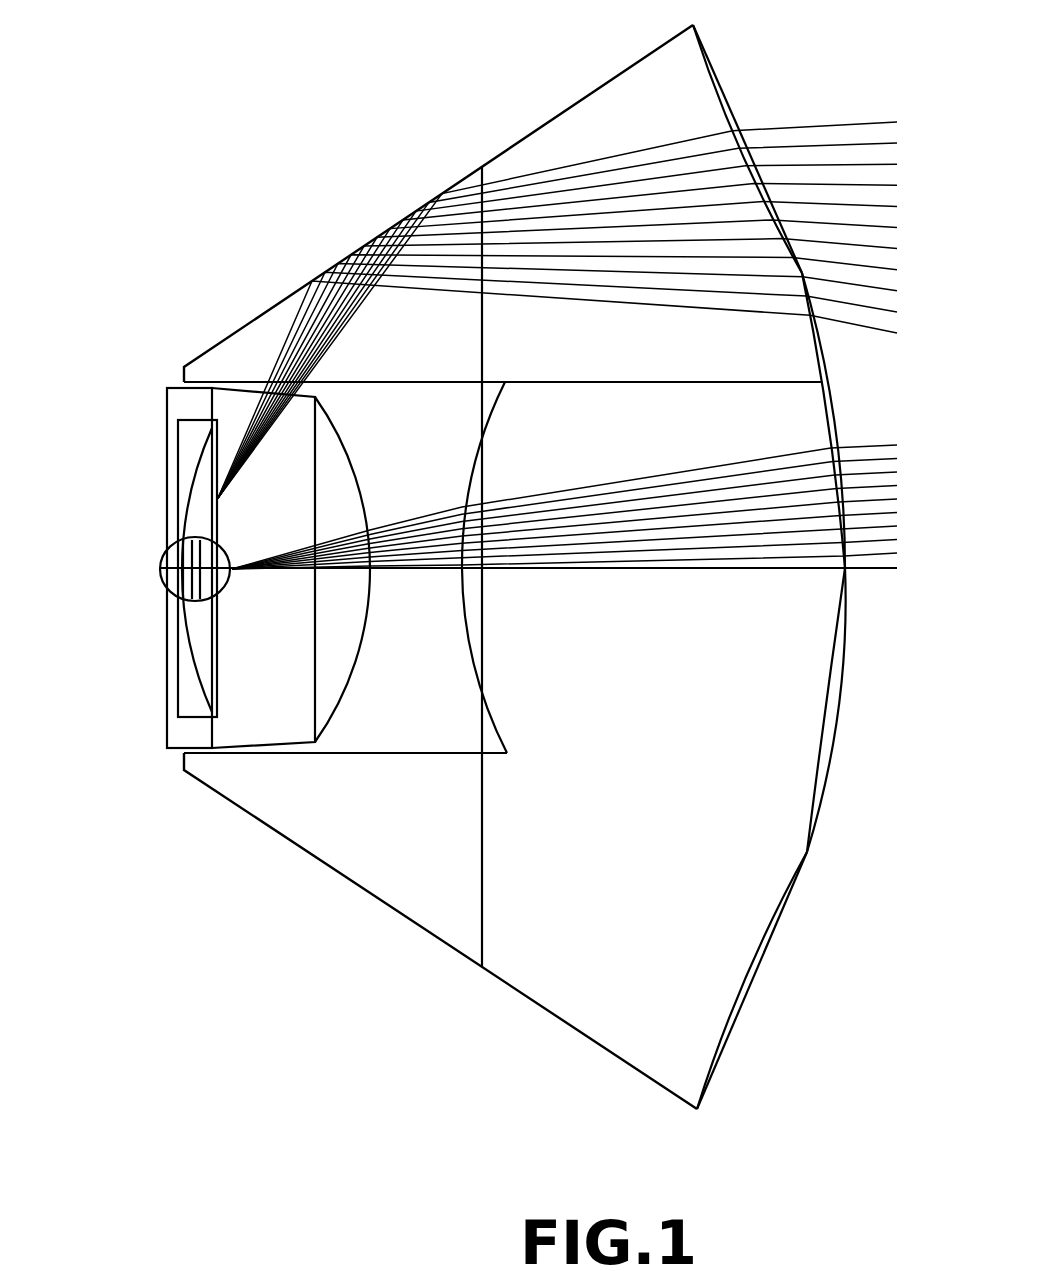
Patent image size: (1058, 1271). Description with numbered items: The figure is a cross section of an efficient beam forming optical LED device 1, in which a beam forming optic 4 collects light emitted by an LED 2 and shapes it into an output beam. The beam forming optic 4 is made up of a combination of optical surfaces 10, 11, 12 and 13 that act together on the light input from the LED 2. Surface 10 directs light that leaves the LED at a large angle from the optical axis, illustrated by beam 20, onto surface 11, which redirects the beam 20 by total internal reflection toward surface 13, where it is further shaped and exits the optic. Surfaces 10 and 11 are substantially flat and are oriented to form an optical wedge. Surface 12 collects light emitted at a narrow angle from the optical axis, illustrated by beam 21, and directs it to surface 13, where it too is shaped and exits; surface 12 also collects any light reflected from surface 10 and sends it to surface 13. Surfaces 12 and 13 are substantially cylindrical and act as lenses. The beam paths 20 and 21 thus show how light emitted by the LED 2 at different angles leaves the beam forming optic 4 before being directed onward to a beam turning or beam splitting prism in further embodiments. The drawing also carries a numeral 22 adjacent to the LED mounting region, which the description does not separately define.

The efficient beam forming optical LED device 1 is at (290, 121).
The LED 2 is at (167, 660).
The beam forming optic 4 is at (607, 65).
The surface 10 is at (443, 386).
The surface 11 is at (270, 309).
The surface 12 is at (503, 728).
The surface 13 is at (762, 982).
The beam 20 is at (560, 300).
The beam 21 is at (348, 568).
The light source unit 22 is at (100, 528).